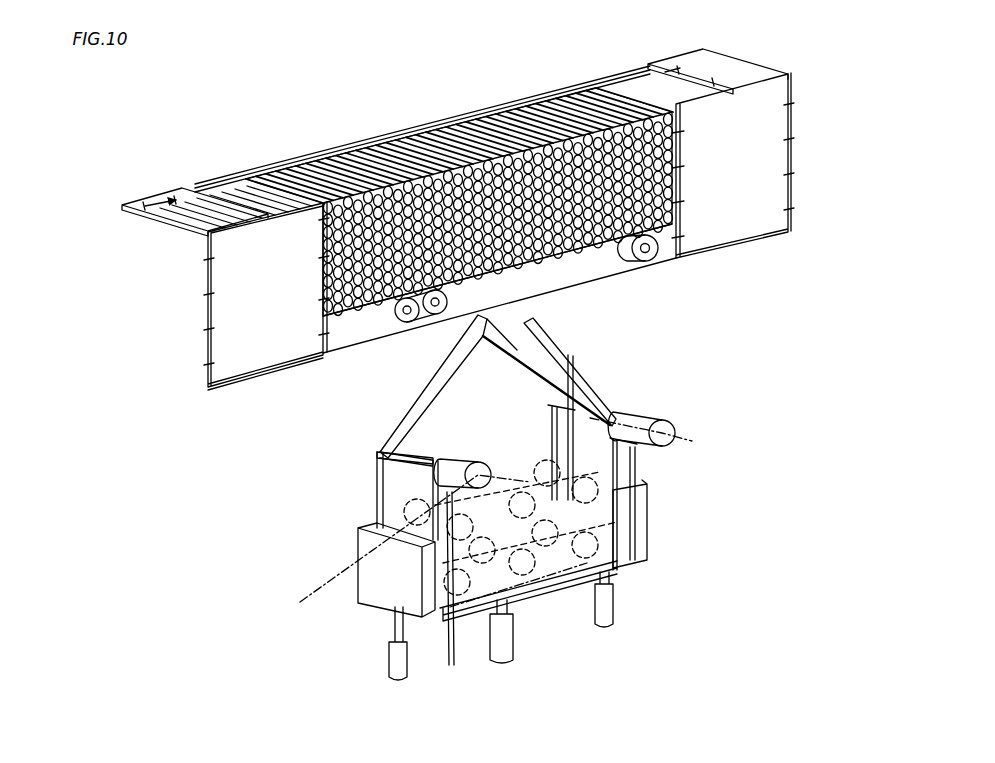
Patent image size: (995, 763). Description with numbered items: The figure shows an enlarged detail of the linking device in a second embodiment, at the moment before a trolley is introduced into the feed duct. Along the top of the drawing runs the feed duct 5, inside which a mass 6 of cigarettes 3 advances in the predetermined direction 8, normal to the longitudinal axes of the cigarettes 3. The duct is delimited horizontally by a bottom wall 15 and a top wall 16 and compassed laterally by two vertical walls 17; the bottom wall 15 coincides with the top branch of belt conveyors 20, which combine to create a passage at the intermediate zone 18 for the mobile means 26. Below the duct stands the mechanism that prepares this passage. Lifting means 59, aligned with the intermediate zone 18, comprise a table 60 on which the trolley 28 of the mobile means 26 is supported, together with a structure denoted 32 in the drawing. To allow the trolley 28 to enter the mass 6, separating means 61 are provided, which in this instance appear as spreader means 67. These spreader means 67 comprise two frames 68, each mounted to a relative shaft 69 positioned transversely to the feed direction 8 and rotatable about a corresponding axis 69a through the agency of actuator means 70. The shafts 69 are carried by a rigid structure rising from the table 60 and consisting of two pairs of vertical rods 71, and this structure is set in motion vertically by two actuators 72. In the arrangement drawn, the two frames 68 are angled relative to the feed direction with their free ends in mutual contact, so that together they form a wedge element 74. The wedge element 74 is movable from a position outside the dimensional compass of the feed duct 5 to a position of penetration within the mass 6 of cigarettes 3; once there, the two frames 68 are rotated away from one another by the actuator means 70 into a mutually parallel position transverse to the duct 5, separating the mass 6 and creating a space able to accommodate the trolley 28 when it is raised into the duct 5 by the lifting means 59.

The cigarettes 3 is at (233, 203).
The feed duct 5 is at (320, 150).
The mass of cigarettes 6 is at (248, 193).
The predetermined direction 8 is at (120, 258).
The bottom wall 15 is at (232, 388).
The top wall 16 is at (122, 208).
The vertical walls 17 is at (232, 292).
The intermediate zone 18 is at (431, 160).
The belt conveyors 20 is at (647, 268).
The mobile means 26 is at (556, 572).
The trolley 28 is at (604, 522).
The receptacle box 32 is at (440, 590).
The lifting means 59 is at (506, 640).
The table 60 is at (471, 602).
The separating means 61 is at (585, 357).
The spreader means 67 is at (412, 373).
The frames 68 is at (405, 396).
The shaft 69 is at (400, 457).
The axis 69a is at (775, 432).
The actuator means 70 is at (440, 477).
The vertical rods 71 is at (560, 428).
The actuators 72 is at (392, 657).
The wedge element 74 is at (440, 350).